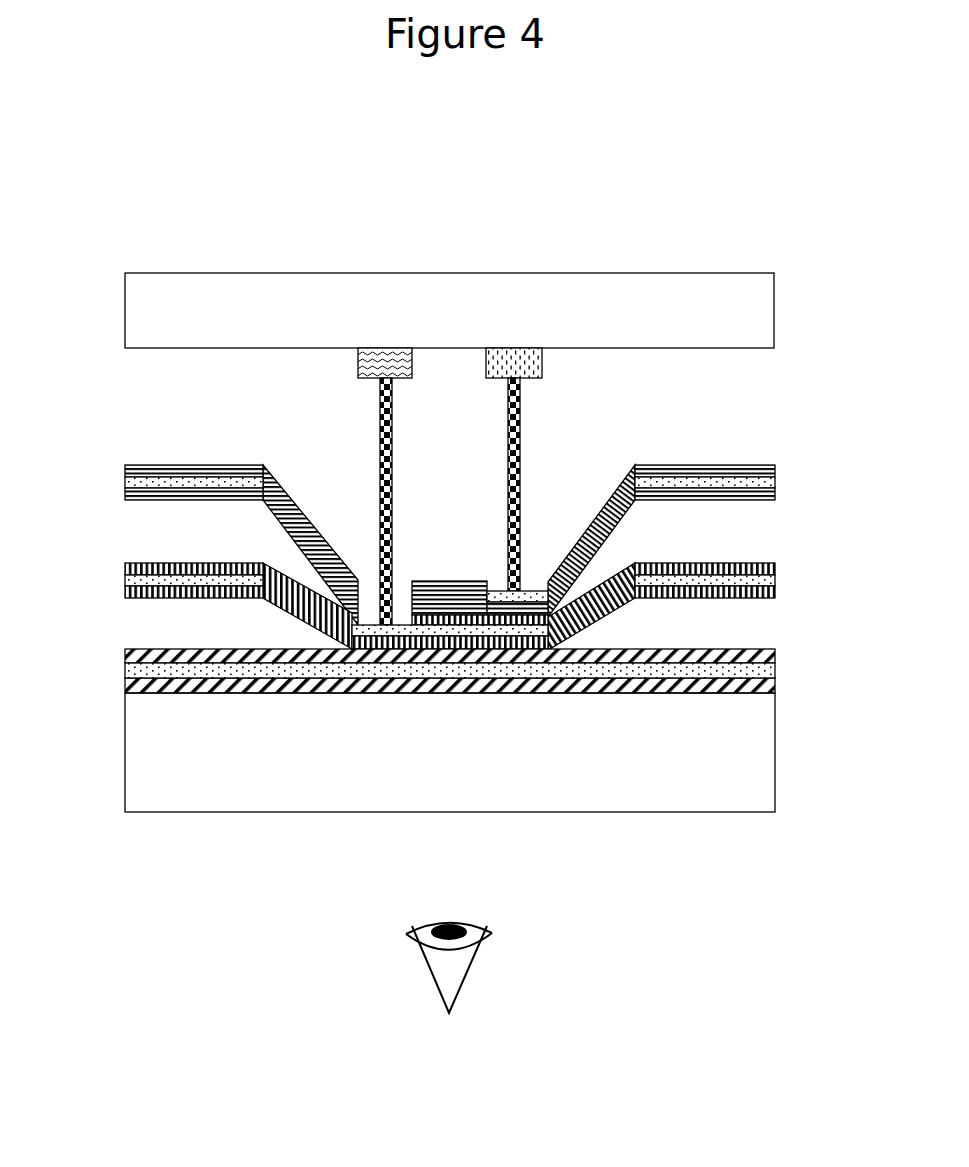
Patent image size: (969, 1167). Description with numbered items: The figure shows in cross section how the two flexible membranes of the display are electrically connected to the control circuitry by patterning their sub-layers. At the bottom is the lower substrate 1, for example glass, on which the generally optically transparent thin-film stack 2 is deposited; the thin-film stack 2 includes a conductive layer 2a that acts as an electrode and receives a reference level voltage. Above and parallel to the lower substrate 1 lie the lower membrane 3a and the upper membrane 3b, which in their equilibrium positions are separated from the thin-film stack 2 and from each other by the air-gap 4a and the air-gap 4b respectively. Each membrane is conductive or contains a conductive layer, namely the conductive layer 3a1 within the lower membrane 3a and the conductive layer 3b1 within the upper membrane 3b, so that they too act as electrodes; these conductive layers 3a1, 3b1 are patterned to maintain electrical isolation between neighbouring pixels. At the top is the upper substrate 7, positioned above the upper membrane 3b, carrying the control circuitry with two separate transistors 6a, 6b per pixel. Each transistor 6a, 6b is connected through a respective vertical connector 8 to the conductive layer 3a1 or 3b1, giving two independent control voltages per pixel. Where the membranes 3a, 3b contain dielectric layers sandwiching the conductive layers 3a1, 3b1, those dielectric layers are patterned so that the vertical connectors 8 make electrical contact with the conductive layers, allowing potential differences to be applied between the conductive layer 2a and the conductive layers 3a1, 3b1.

The lower substrate 1 is at (188, 754).
The thin-film stack 2 is at (118, 648).
The conductive layer 2a is at (740, 672).
The lower membrane 3a is at (118, 560).
The conductive layer of lower membrane 3a1 is at (740, 577).
The upper membrane 3b is at (118, 462).
The conductive layer of upper membrane 3b1 is at (740, 483).
The air-gap 4a is at (188, 627).
The air-gap 4b is at (188, 533).
The transistor 6a is at (385, 378).
The transistor 6b is at (512, 378).
The upper substrate 7 is at (188, 315).
The vertical connector 8 is at (379, 407).